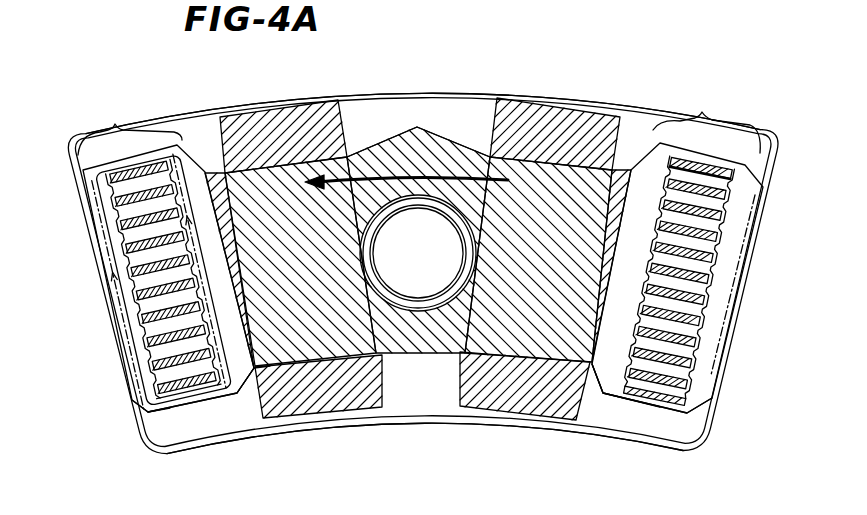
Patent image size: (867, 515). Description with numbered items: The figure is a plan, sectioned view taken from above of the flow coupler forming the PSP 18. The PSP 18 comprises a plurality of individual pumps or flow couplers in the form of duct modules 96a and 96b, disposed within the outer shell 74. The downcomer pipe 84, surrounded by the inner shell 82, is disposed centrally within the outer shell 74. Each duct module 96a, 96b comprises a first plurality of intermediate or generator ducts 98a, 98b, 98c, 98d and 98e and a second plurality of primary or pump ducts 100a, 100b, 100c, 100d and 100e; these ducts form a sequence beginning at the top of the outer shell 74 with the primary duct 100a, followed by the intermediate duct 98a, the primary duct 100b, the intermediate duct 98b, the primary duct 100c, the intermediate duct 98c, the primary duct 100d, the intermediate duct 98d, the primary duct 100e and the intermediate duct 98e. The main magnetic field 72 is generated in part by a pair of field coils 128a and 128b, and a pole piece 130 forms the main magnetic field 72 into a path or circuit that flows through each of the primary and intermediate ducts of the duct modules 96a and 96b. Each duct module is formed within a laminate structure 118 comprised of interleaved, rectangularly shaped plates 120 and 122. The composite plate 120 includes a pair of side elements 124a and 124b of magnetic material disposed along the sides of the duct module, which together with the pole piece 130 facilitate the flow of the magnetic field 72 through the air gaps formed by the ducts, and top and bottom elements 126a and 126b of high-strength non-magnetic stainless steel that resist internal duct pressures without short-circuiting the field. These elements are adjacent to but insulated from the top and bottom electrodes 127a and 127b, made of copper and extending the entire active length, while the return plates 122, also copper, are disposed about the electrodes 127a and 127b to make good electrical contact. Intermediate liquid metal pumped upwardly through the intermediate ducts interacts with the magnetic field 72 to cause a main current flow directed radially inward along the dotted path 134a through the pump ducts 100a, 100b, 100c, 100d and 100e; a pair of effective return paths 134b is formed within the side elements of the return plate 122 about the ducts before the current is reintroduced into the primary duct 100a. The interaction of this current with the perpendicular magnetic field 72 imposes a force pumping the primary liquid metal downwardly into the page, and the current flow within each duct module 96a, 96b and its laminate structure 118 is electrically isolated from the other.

The PSP 18 is at (620, 73).
The outer shell 74 is at (387, 88).
The composite plate 120 is at (585, 427).
The main magnetic field 72 is at (373, 177).
The pole piece 130 is at (446, 139).
The inner shell 82 is at (458, 212).
The downcomer pipe 84 is at (375, 276).
The field coil 128a is at (222, 118).
The field coil 128b is at (622, 128).
The top electrode 127a is at (214, 172).
The bottom electrode 127b is at (203, 390).
The side element 124a is at (592, 377).
The side element 124b is at (698, 402).
The return plate 122 is at (252, 370).
The laminate structure 118 is at (143, 415).
The duct module 96a is at (115, 124).
The duct module 96b is at (702, 112).
The top element 126a is at (705, 160).
The bottom element 126b is at (663, 402).
The intermediate duct 98a is at (703, 207).
The intermediate duct 98b is at (690, 253).
The intermediate duct 98c is at (683, 293).
The intermediate duct 98d is at (670, 340).
The intermediate duct 98e is at (665, 382).
The primary duct 100a is at (713, 187).
The primary duct 100b is at (700, 233).
The primary duct 100c is at (693, 273).
The primary duct 100d is at (685, 318).
The primary duct 100e is at (675, 362).
The main current flow path 134a is at (212, 328).
The effective return path 134b is at (190, 220).